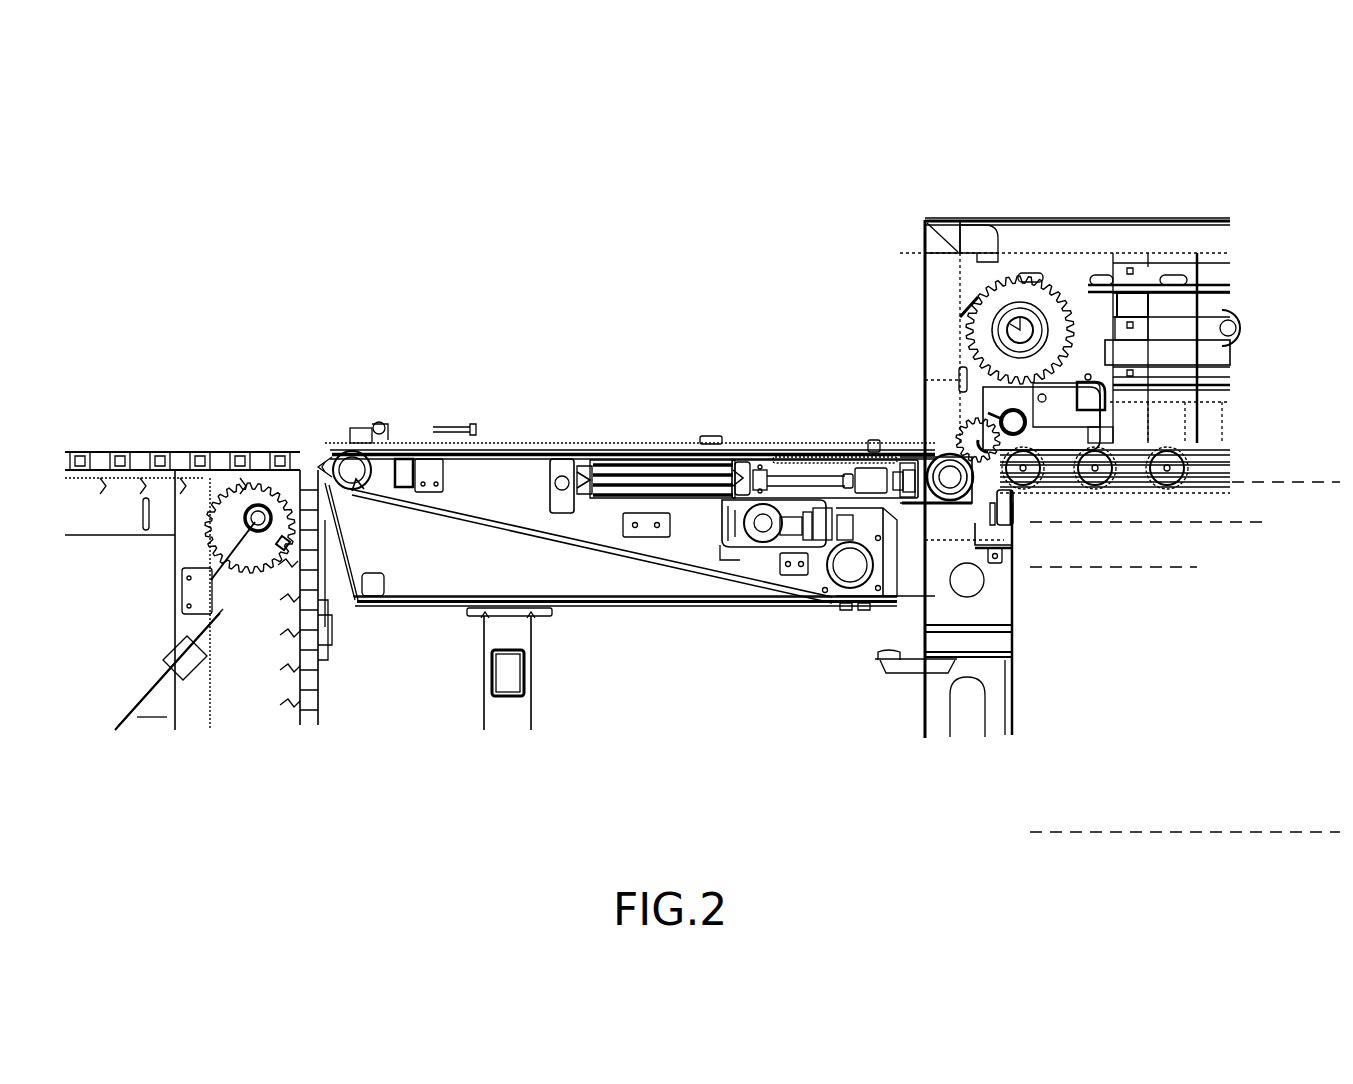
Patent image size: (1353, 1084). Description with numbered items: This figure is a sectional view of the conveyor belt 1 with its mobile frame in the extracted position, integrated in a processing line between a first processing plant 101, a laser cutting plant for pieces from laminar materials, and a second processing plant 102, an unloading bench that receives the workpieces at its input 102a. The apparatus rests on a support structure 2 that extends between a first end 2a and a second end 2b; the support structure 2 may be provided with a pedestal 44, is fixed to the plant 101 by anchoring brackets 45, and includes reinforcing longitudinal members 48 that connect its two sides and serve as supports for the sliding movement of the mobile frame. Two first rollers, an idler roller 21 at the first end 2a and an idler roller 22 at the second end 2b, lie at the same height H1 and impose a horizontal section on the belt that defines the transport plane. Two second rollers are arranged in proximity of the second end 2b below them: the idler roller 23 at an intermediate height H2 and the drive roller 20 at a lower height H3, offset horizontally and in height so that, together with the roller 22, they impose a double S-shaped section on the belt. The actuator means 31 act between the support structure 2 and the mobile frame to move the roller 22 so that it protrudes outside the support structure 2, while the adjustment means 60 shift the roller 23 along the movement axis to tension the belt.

The conveyor belt 1 is at (664, 210).
The support structure 2 is at (686, 645).
The first end 2a is at (318, 448).
The second end 2b is at (950, 512).
The drive roller 20 is at (850, 607).
The idler roller 21 is at (348, 453).
The idler roller 22 is at (1013, 507).
The idler roller 23 is at (752, 607).
The actuator means 31 is at (696, 440).
The pedestal 44 is at (500, 716).
The anchoring brackets 45 is at (336, 612).
The reinforcing longitudinal members 48 is at (404, 458).
The adjustment means 60 is at (815, 512).
The first processing plant 101 is at (130, 445).
The second processing plant 102 is at (1075, 203).
The input of the second plant 102a is at (950, 432).
The height H1 is at (1331, 484).
The intermediate height H2 is at (1259, 524).
The lower height H3 is at (1192, 569).